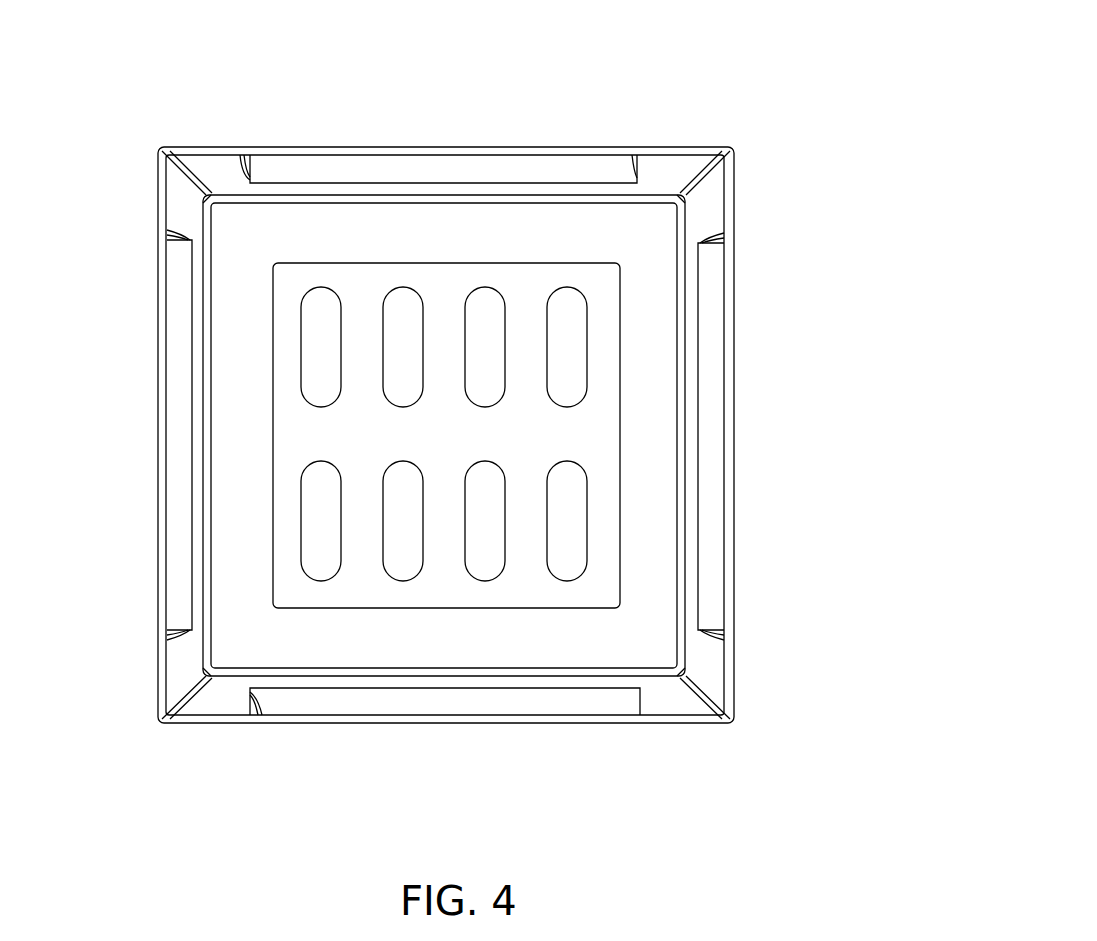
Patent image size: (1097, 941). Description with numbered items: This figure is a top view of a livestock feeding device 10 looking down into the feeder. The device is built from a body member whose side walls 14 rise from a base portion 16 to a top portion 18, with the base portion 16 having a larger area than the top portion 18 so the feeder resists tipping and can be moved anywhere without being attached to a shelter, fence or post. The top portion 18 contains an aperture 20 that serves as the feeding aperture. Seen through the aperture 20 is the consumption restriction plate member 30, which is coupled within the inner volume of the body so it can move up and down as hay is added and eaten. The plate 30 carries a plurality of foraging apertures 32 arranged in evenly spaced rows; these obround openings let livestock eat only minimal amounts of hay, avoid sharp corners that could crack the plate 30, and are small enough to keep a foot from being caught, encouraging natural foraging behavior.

The livestock feeding device 10 is at (640, 65).
The side walls 14 is at (345, 172).
The base portion 16 is at (735, 185).
The top portion 18 is at (255, 640).
The aperture 20 is at (592, 442).
The consumption restriction plate member 30 is at (446, 580).
The foraging apertures 32 is at (564, 540).